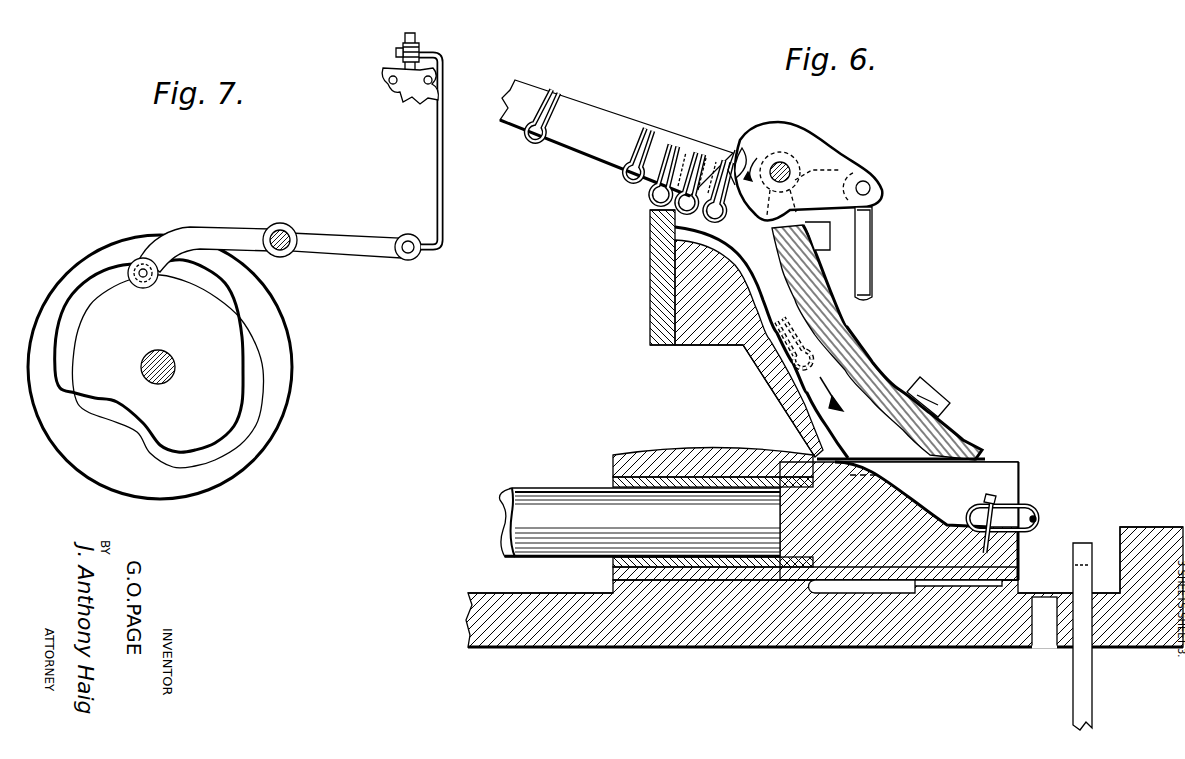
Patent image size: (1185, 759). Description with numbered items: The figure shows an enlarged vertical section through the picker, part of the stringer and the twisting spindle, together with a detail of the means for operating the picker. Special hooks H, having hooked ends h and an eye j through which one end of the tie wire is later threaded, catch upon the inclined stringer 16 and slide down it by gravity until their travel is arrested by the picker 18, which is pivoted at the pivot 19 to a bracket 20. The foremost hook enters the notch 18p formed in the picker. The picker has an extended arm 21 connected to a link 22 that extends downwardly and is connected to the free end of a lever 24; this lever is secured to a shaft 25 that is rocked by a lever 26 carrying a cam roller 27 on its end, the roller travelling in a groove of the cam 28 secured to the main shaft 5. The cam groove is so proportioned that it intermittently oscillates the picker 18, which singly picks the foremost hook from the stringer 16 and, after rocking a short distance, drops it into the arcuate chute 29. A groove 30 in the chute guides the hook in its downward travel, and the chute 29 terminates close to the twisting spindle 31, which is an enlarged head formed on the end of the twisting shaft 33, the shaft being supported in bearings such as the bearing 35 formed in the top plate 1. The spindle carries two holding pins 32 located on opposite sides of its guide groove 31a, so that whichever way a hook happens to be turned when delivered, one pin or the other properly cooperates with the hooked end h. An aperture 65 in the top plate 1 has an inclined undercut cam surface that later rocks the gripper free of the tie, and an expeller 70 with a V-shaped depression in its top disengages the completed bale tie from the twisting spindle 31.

In FIG. 6, the top plate 1 is at (570, 645).
In FIG. 7, the main shaft 5 is at (177, 367).
In FIG. 6, the inclined stringer 16 is at (528, 85).
In FIG. 7, the picker 18 is at (414, 38).
In FIG. 6, the picker 18 is at (777, 136).
In FIG. 6, the notch 18p is at (750, 128).
In FIG. 6, the pivot 19 is at (786, 165).
In FIG. 7, the bracket 20 is at (398, 47).
In FIG. 6, the bracket 20 is at (845, 160).
In FIG. 7, the extended arm 21 is at (421, 50).
In FIG. 6, the extended arm 21 is at (870, 166).
In FIG. 7, the link 22 is at (447, 171).
In FIG. 6, the link 22 is at (874, 228).
In FIG. 7, the lever 24 is at (357, 240).
In FIG. 7, the shaft 25 is at (285, 232).
In FIG. 7, the lever 26 is at (223, 232).
In FIG. 7, the cam roller 27 is at (142, 290).
In FIG. 7, the cam 28 is at (256, 350).
In FIG. 6, the arcuate chute 29 is at (777, 282).
In FIG. 6, the groove 30 is at (767, 308).
In FIG. 6, the twisting spindle 31 is at (876, 580).
In FIG. 6, the guide groove 31a is at (943, 513).
In FIG. 6, the holding pins 32 is at (992, 494).
In FIG. 6, the twisting shaft 33 is at (552, 490).
In FIG. 6, the bearing 35 is at (645, 450).
In FIG. 6, the aperture 65 is at (1043, 645).
In FIG. 6, the expeller 70 is at (1093, 696).
In FIG. 6, the hooked ends h is at (560, 88).
In FIG. 6, the hooks H is at (560, 125).
In FIG. 6, the eye j is at (538, 143).